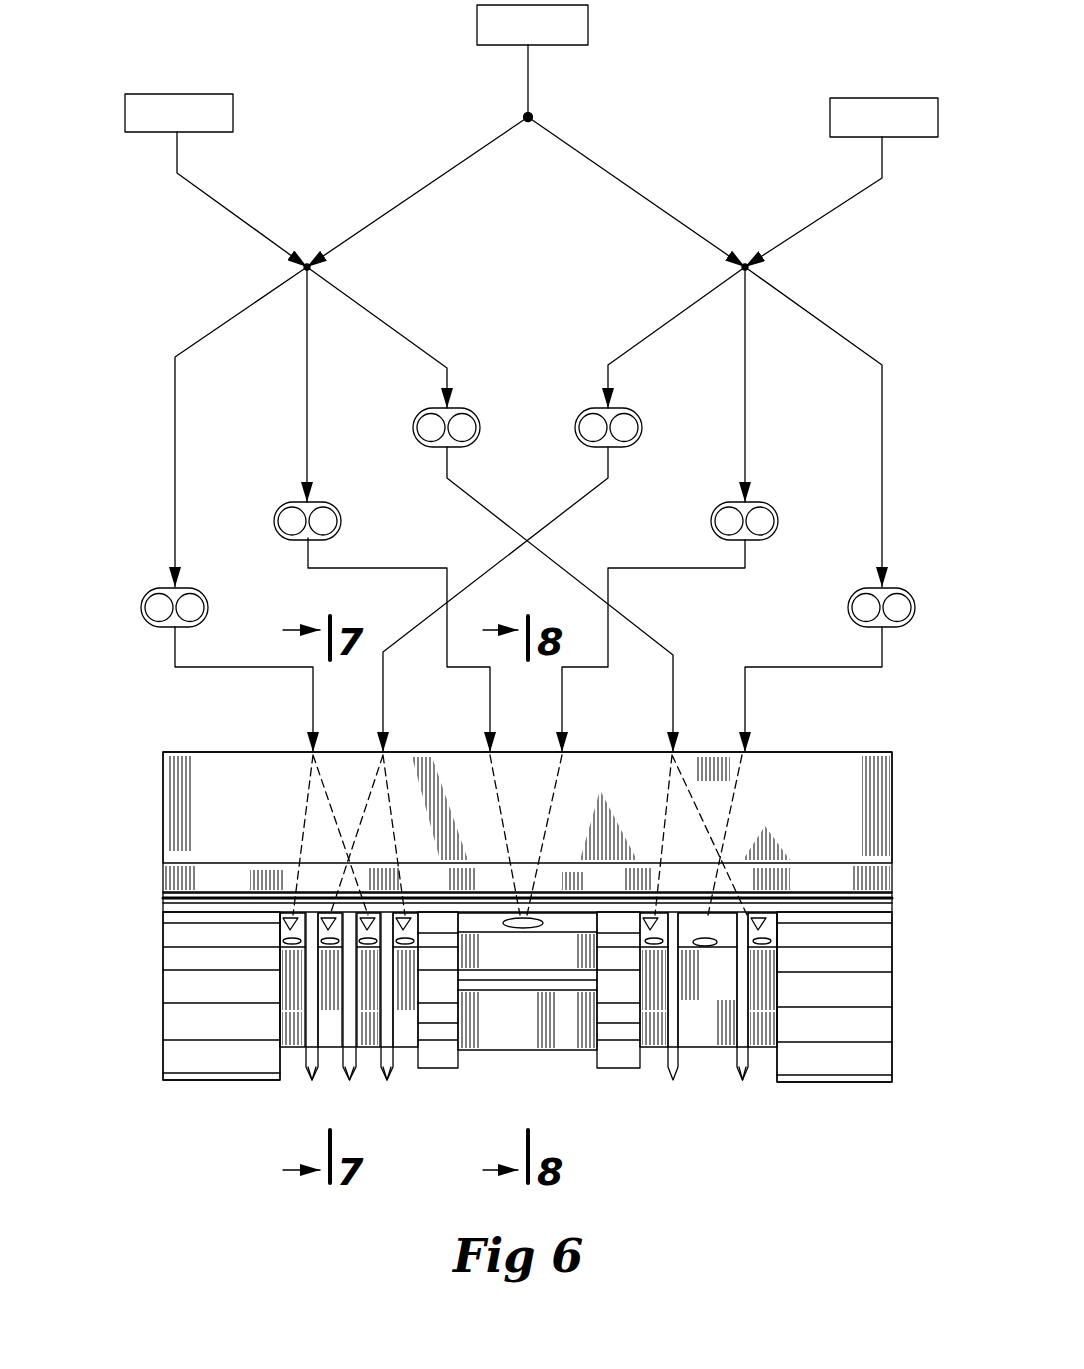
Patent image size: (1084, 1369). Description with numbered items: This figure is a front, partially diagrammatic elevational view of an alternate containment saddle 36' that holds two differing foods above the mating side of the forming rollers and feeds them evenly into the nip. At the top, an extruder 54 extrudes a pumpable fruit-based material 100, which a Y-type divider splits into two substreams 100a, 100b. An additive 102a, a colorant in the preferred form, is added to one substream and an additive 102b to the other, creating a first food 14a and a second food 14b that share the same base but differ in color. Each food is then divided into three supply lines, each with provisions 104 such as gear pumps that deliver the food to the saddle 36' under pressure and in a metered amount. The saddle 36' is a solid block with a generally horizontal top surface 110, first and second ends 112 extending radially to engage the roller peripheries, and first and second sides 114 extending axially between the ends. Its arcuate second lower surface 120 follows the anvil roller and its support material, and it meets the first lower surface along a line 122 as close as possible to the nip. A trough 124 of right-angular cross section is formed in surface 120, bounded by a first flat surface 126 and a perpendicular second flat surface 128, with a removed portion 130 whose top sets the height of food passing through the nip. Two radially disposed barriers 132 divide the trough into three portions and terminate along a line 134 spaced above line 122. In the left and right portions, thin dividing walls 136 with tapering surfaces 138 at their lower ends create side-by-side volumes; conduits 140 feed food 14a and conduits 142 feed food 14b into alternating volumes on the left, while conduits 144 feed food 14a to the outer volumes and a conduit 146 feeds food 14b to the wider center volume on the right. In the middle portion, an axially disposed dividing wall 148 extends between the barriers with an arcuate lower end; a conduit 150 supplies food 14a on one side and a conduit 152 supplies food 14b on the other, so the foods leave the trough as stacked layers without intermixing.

The extruder 54 is at (477, 24).
The fruit-based material 100 is at (535, 82).
The substream 100a is at (425, 190).
The substream 100b is at (673, 218).
The additive 102a is at (212, 192).
The additive 102b is at (860, 192).
The food 14a is at (307, 330).
The food 14b is at (640, 340).
The provisions 104 is at (277, 535).
The containment saddle 36' is at (499, 881).
The top surface 110 is at (833, 753).
The ends 112 is at (163, 770).
The sides 114 is at (197, 803).
The second lower surface 120 is at (180, 987).
The line 122 is at (187, 1082).
The trough 124 is at (328, 1002).
The first flat surface 126 is at (290, 1030).
The second flat surface 128 is at (290, 920).
The removed portion 130 is at (300, 1057).
The barriers 132 is at (435, 1053).
The line 134 is at (312, 1072).
The dividing walls 136 is at (350, 982).
The tapering surfaces 138 is at (385, 1078).
The conduits 140 is at (323, 797).
The conduits 142 is at (360, 805).
The conduits 144 is at (660, 805).
The conduit 146 is at (737, 800).
The dividing wall 148 is at (497, 985).
The conduit 150 is at (495, 783).
The conduit 152 is at (560, 773).